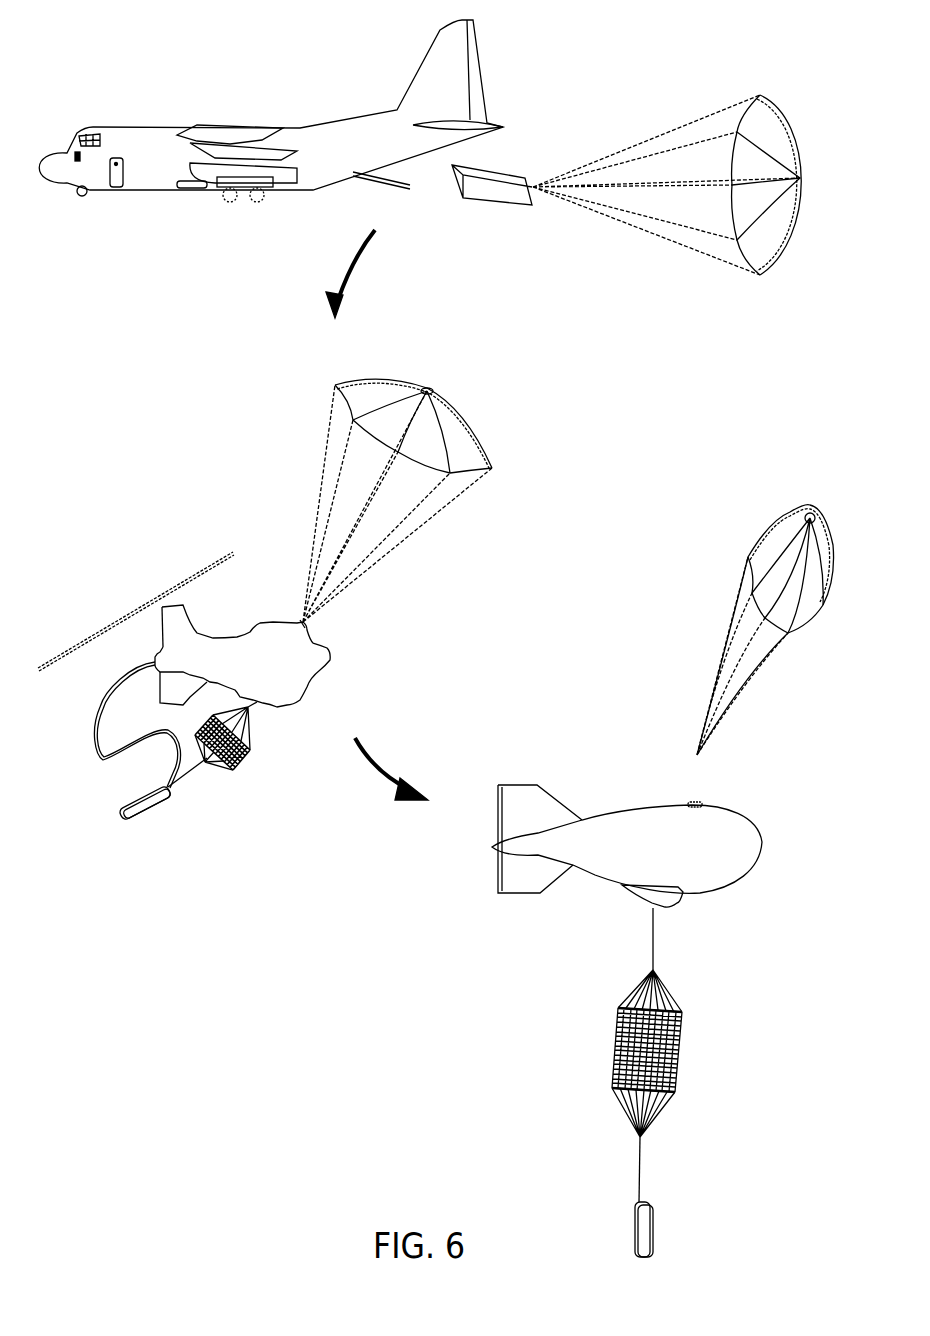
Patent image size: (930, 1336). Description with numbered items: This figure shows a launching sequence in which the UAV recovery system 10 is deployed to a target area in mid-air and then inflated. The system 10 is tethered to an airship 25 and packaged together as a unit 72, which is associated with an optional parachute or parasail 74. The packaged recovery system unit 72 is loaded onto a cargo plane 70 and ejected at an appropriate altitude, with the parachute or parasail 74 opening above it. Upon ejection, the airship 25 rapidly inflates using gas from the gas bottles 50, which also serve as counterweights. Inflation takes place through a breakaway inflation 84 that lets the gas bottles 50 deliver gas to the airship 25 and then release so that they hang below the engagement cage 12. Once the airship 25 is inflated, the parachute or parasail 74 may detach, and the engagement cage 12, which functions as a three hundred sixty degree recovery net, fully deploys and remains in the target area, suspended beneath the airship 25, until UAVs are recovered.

The cargo plane 70 is at (313, 137).
The packaged recovery system unit 72 is at (495, 175).
The parachute or parasail 74 is at (775, 125).
The UAV recovery system 10 is at (206, 496).
The airship 25 is at (278, 677).
The breakaway inflation 84 is at (103, 760).
The gas bottles 50 is at (147, 813).
The engagement cage 12 is at (678, 1057).